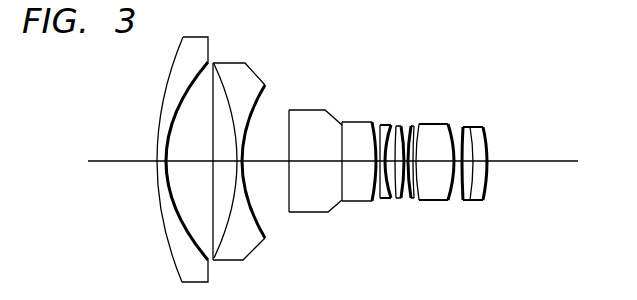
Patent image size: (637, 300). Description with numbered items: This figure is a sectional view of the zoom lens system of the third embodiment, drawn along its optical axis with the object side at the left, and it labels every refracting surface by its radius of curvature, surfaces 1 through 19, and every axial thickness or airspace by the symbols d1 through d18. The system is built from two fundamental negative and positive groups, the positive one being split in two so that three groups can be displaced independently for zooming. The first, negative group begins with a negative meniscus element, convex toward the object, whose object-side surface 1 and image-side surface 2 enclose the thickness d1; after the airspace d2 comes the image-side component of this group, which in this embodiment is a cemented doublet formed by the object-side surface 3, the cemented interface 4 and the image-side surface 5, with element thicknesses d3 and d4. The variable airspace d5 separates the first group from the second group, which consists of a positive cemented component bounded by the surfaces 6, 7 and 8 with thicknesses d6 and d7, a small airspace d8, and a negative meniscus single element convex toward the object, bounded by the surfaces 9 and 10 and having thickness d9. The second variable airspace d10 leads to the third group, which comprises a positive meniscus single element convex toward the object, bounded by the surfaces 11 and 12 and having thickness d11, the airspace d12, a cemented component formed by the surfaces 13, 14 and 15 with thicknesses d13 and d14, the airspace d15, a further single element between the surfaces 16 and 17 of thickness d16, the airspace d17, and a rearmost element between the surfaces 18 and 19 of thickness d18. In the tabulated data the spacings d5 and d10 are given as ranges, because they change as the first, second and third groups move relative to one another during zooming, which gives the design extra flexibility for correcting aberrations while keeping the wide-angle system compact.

The lens surface r1 1 is at (180, 275).
The lens surface r2 2 is at (186, 242).
The lens surface r3 3 is at (226, 250).
The lens surface r4 4 is at (244, 250).
The lens surface r5 5 is at (268, 240).
The lens surface r6 6 is at (288, 213).
The lens surface r7 7 is at (340, 206).
The lens surface r8 8 is at (374, 205).
The lens surface r9 9 is at (381, 205).
The lens surface r10 10 is at (388, 205).
The lens surface r11 11 is at (396, 205).
The lens surface r12 12 is at (404, 205).
The lens surface r13 13 is at (410, 205).
The lens surface r14 14 is at (414, 205).
The lens surface r15 15 is at (420, 205).
The lens surface r16 16 is at (453, 205).
The lens surface r17 17 is at (464, 205).
The lens surface r18 18 is at (475, 204).
The lens surface r19 19 is at (488, 186).
The lens thickness d1 is at (158, 150).
The airspace d2 is at (190, 163).
The lens thickness d3 is at (227, 140).
The lens thickness d4 is at (255, 134).
The variable airspace d5 is at (266, 163).
The lens thickness d6 is at (312, 163).
The lens thickness d7 is at (355, 163).
The airspace d8 is at (377, 120).
The lens thickness d9 is at (395, 160).
The variable airspace d10 is at (404, 160).
The lens thickness d11 is at (412, 160).
The airspace d12 is at (418, 130).
The lens thickness d13 is at (436, 125).
The lens thickness d14 is at (455, 128).
The airspace d15 is at (470, 130).
The lens thickness d16 is at (490, 128).
The airspace d17 is at (488, 131).
The lens thickness d18 is at (488, 149).